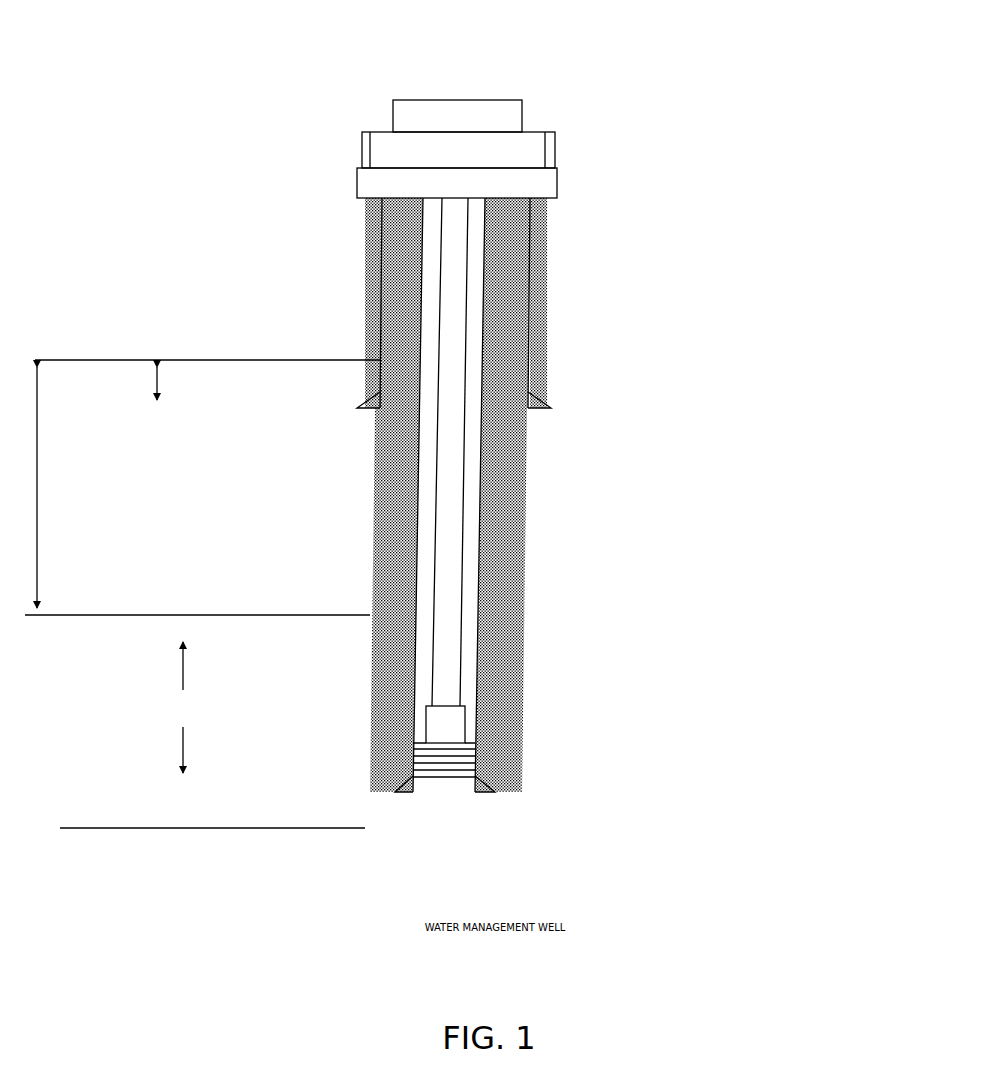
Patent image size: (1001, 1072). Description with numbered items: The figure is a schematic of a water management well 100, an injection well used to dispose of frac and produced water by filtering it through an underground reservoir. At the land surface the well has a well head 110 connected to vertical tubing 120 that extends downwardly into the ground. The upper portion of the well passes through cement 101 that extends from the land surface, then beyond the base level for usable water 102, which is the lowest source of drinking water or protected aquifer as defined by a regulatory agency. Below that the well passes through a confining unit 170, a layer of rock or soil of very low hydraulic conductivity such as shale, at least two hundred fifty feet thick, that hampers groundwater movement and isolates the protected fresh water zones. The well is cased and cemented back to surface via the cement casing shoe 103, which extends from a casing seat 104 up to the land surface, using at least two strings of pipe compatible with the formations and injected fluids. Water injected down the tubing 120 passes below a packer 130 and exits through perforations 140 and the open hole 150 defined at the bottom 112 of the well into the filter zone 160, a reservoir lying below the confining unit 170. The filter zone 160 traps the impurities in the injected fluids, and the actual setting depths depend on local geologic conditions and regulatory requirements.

The water management well 100 is at (372, 98).
The well head 110 is at (557, 135).
The cement 101 is at (548, 243).
The base level for usable water 102 is at (548, 368).
The cement casing shoe 103 is at (528, 493).
The casing seat 104 is at (352, 409).
The confining unit 170 is at (116, 487).
The tubing 120 is at (466, 582).
The filter zone 160 is at (197, 723).
The packer 130 is at (468, 727).
The bottom of the well 112 is at (386, 782).
The perforations 140 is at (480, 763).
The open hole 150 is at (442, 797).